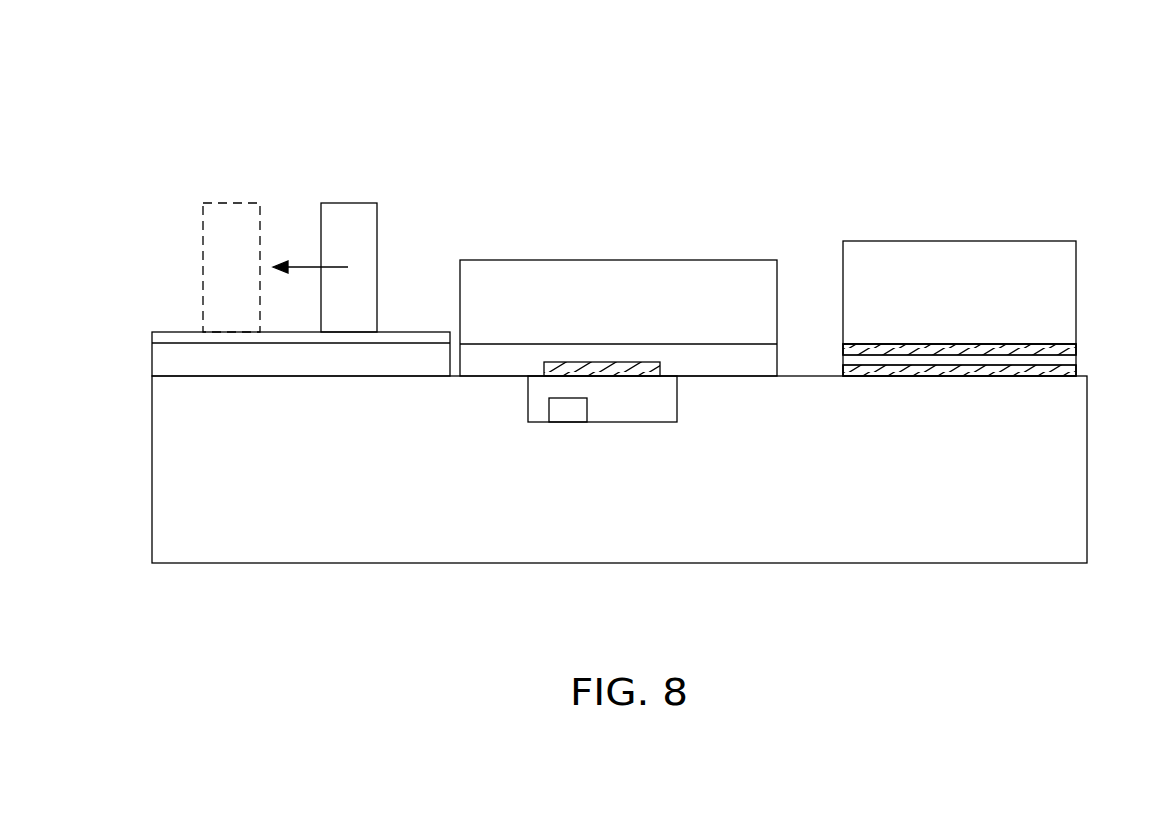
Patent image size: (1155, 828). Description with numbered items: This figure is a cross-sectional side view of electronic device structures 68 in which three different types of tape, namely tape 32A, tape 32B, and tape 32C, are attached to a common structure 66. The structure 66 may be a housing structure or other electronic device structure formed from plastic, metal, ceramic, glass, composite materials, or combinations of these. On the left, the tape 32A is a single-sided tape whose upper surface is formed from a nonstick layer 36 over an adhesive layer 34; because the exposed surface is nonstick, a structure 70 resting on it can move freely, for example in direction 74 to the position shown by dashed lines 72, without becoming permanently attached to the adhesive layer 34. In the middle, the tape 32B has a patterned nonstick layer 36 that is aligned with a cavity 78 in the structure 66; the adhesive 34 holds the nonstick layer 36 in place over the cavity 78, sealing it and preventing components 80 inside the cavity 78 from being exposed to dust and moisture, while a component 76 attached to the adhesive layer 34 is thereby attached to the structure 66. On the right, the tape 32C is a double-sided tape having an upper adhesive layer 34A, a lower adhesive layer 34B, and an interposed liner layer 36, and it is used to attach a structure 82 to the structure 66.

The electronic device structures 68 is at (175, 95).
The structure 66 is at (522, 553).
The tape 32A is at (143, 332).
The tape 32B is at (520, 385).
The tape 32C is at (1085, 345).
The adhesive layer 34 is at (167, 368).
The upper adhesive layer 34A is at (1068, 350).
The lower adhesive layer 34B is at (1050, 370).
The nonstick layer 36 is at (167, 337).
The structure 70 is at (347, 210).
The dashed lines 72 is at (232, 210).
The direction 74 is at (310, 262).
The component 76 is at (603, 277).
The cavity 78 is at (627, 415).
The components 80 is at (567, 415).
The structure 82 is at (1068, 295).